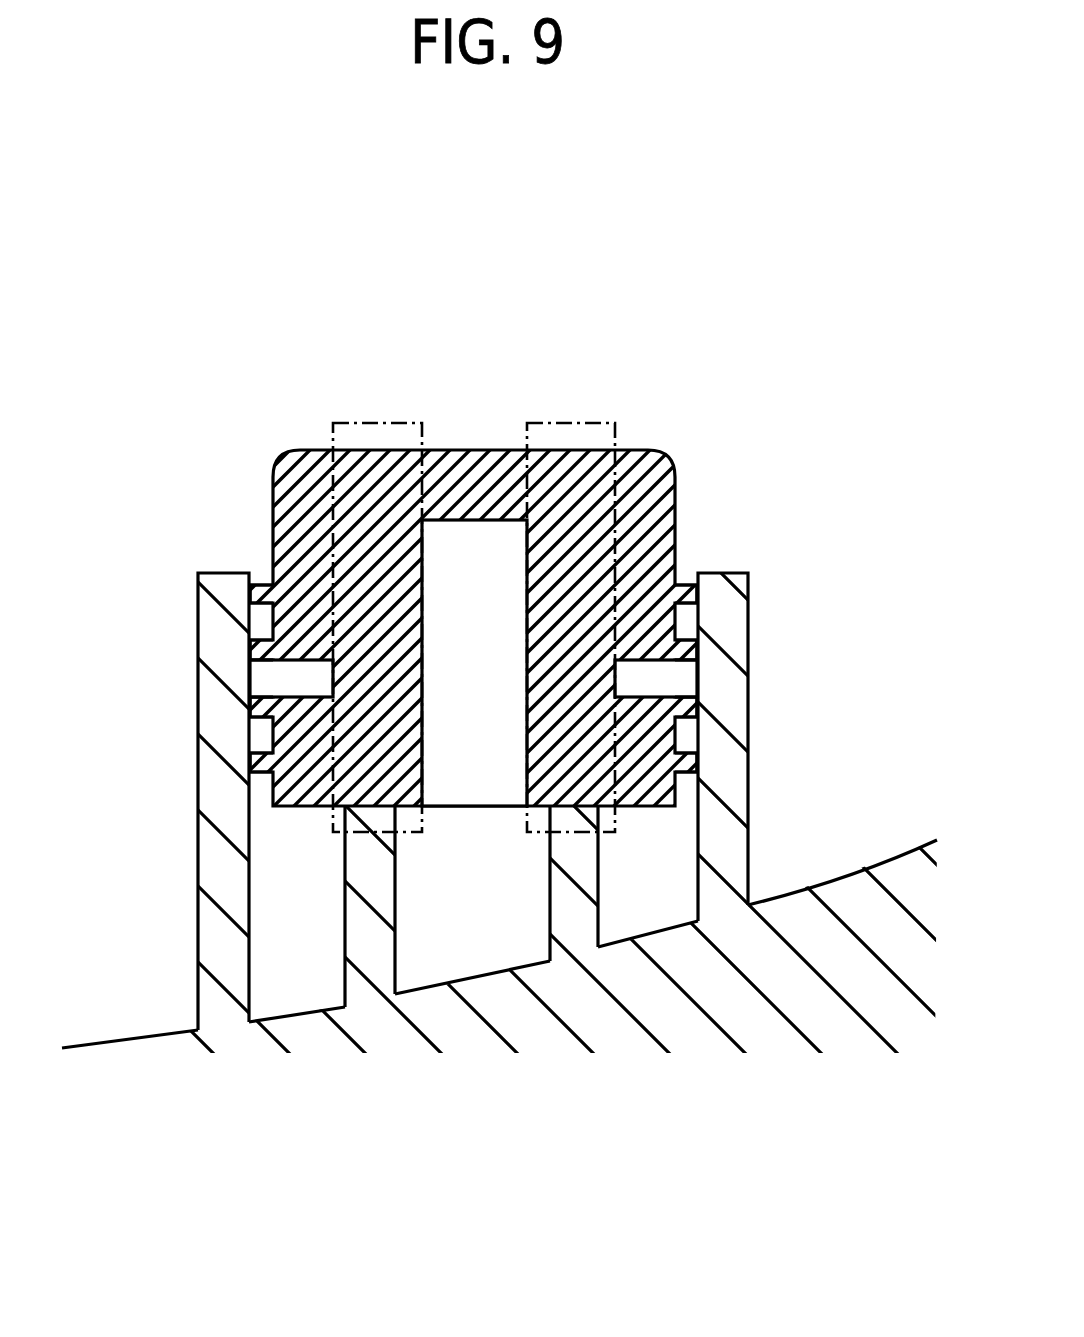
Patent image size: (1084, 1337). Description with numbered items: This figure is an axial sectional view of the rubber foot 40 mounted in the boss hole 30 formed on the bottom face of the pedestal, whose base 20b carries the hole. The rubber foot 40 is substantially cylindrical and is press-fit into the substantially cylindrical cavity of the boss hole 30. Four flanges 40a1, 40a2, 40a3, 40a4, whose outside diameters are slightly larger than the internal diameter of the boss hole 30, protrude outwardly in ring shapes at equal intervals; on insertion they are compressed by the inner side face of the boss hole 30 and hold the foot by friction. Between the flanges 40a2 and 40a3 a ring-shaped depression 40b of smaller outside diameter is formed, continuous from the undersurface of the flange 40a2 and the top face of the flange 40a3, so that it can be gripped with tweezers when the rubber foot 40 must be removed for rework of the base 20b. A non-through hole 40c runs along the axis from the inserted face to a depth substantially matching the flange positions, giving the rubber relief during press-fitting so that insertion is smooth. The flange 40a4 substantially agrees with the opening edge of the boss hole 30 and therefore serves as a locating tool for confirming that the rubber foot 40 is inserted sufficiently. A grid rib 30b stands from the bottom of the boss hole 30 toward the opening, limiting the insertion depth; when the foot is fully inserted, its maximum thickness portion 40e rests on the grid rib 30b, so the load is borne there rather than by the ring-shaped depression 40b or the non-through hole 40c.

The base 20b is at (913, 845).
The boss hole 30 is at (198, 907).
The grid rib 30b is at (345, 937).
The rubber foot 40 is at (662, 450).
The flange 40a1 is at (255, 765).
The flange 40a2 is at (253, 712).
The flange 40a3 is at (254, 632).
The flange 40a4 is at (262, 590).
The ring-shaped depression 40b is at (328, 682).
The non-through hole 40c is at (478, 545).
The maximum thickness portion 40e is at (380, 418).